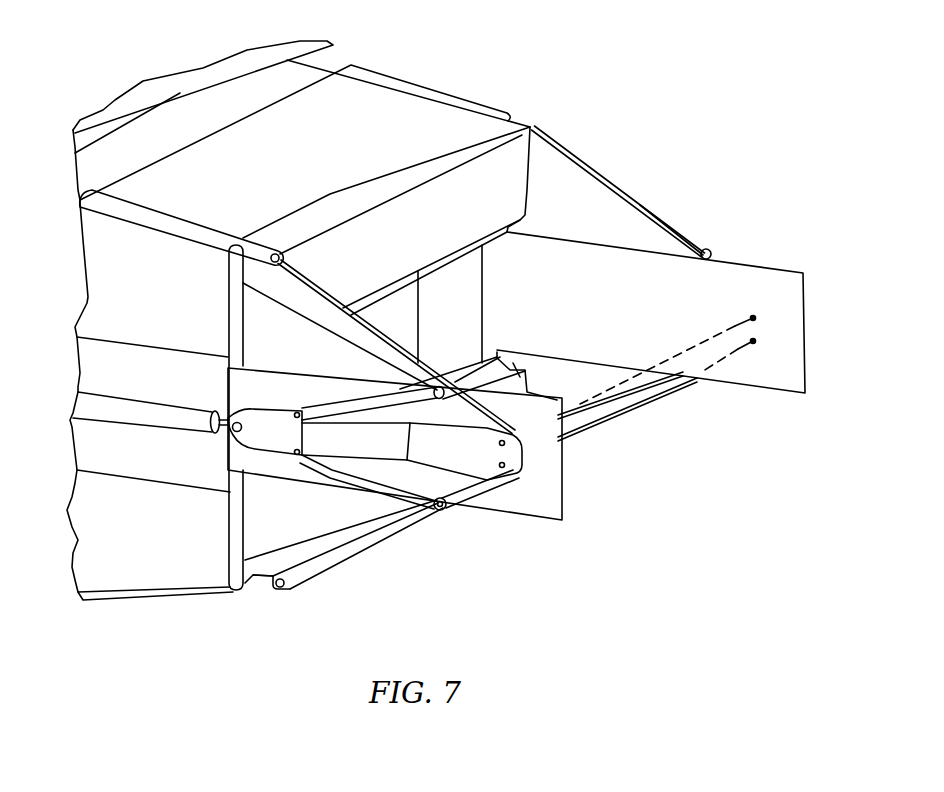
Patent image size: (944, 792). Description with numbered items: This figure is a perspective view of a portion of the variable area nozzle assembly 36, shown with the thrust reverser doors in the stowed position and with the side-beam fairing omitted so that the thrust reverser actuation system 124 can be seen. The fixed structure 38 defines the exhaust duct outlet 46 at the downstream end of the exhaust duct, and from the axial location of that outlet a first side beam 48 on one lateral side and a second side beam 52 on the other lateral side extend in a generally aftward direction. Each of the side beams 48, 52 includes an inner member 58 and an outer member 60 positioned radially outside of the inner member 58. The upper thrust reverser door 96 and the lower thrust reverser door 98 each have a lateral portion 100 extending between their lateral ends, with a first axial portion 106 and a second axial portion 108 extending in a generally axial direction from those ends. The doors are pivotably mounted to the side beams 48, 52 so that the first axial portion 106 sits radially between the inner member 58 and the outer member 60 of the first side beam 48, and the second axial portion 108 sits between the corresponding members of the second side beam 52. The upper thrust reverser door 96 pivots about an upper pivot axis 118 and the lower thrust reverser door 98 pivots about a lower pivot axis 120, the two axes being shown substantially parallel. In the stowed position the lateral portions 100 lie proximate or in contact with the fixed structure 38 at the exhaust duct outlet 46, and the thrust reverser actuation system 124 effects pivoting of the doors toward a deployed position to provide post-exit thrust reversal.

The variable area nozzle assembly 36 is at (760, 152).
The fixed structure 38 is at (112, 520).
The exhaust duct outlet 46 is at (288, 212).
The first side beam 48 is at (296, 507).
The second side beam 52 is at (795, 262).
The inner member 58 is at (787, 303).
The outer member 60 is at (390, 500).
The upper thrust reverser door 96 is at (578, 148).
The lower thrust reverser door 98 is at (328, 578).
The lateral portion 100 is at (400, 178).
The first axial portion 106 is at (277, 286).
The second axial portion 108 is at (603, 210).
The upper pivot axis 118 is at (735, 327).
The lower pivot axis 120 is at (665, 388).
The thrust reverser actuation system 124 is at (360, 485).